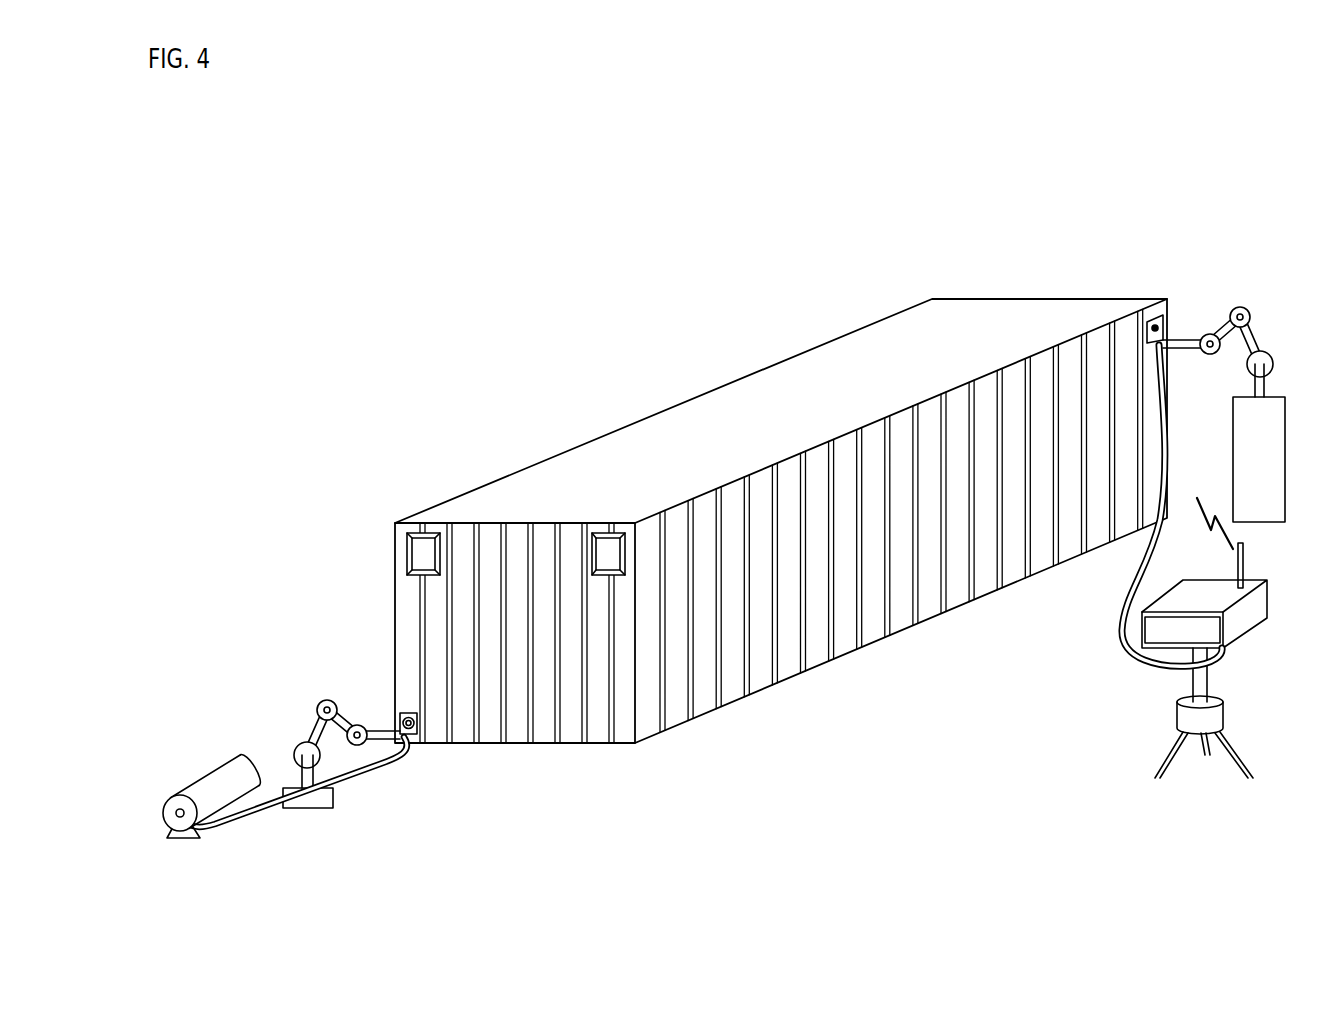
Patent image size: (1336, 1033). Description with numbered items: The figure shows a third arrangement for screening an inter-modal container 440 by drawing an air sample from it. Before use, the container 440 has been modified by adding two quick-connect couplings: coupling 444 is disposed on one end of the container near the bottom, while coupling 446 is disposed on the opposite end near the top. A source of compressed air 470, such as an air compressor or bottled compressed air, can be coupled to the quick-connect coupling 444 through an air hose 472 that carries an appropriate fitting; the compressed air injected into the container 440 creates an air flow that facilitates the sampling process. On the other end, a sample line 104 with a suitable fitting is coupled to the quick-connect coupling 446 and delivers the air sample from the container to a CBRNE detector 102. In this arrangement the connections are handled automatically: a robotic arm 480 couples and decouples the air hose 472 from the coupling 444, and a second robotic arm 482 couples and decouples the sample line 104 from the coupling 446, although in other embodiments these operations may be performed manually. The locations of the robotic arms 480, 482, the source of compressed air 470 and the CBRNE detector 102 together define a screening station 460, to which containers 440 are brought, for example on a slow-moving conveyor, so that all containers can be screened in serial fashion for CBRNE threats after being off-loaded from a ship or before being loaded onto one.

The inter-modal container 440 is at (858, 389).
The quick-connect coupling 444 is at (420, 731).
The quick-connect coupling 446 is at (1157, 314).
The screening station 460 is at (884, 837).
The source of compressed air 470 is at (215, 792).
The air hose 472 is at (270, 817).
The robotic arm 480 is at (307, 702).
The robotic arm 482 is at (1265, 330).
The CBRNE detector 102 is at (1238, 627).
The sample line 104 is at (1120, 642).